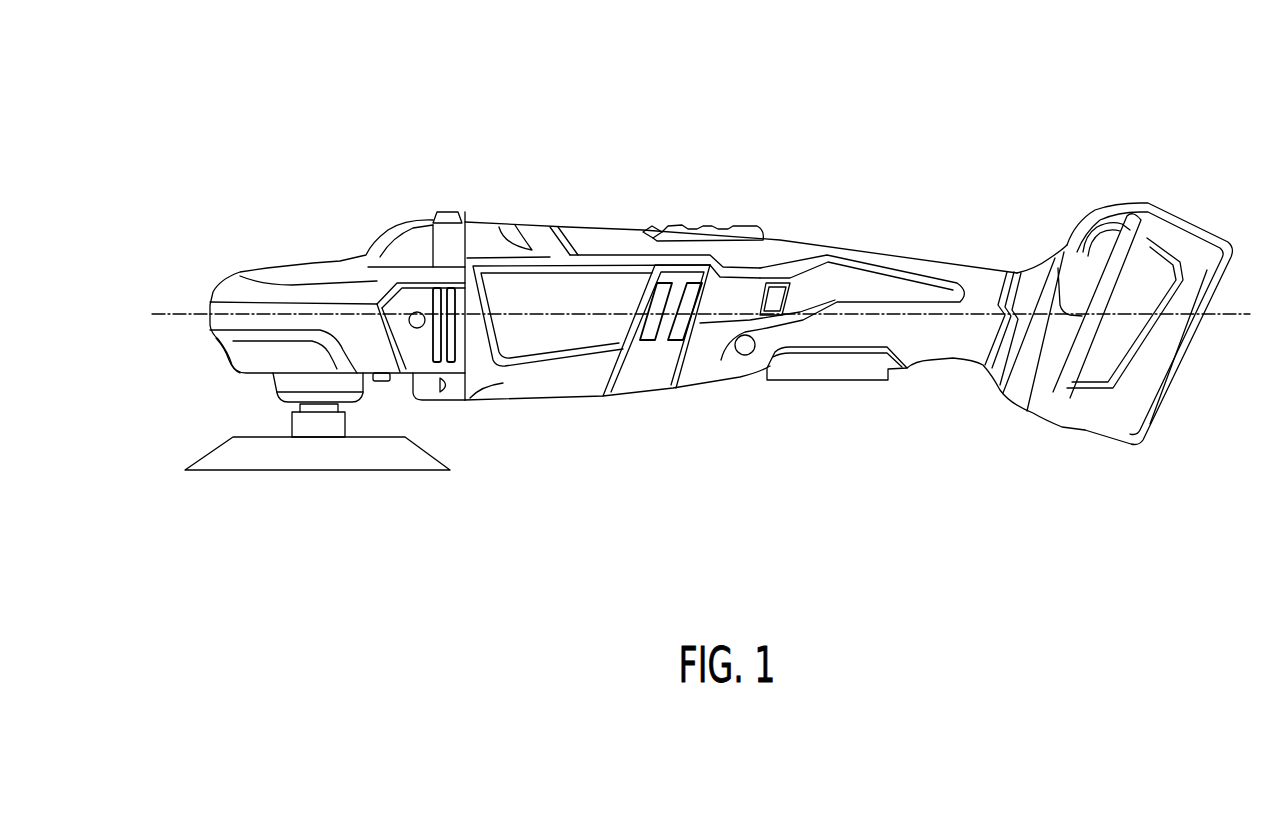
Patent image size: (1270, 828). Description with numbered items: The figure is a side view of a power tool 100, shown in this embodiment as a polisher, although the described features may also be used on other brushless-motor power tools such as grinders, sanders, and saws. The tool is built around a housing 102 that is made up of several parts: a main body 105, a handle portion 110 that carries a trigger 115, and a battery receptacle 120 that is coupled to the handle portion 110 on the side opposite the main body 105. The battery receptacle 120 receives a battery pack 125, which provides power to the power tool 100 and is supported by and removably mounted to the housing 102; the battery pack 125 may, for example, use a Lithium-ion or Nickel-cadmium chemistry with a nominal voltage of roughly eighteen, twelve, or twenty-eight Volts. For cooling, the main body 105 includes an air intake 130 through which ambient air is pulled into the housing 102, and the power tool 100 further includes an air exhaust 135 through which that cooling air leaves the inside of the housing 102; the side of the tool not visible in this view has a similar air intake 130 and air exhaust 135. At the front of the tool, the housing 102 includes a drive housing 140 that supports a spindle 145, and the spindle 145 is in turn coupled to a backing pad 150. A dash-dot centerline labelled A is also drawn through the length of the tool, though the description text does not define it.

The power tool 100 is at (231, 125).
The longitudinal axis A is at (172, 313).
The housing 102 is at (720, 230).
The main body 105 is at (538, 237).
The handle portion 110 is at (875, 256).
The trigger 115 is at (803, 370).
The battery receptacle 120 is at (1052, 260).
The battery pack 125 is at (1182, 224).
The air intake 130 is at (638, 343).
The air exhaust 135 is at (443, 350).
The drive housing 140 is at (277, 266).
The spindle 145 is at (295, 405).
The backing pad 150 is at (390, 460).